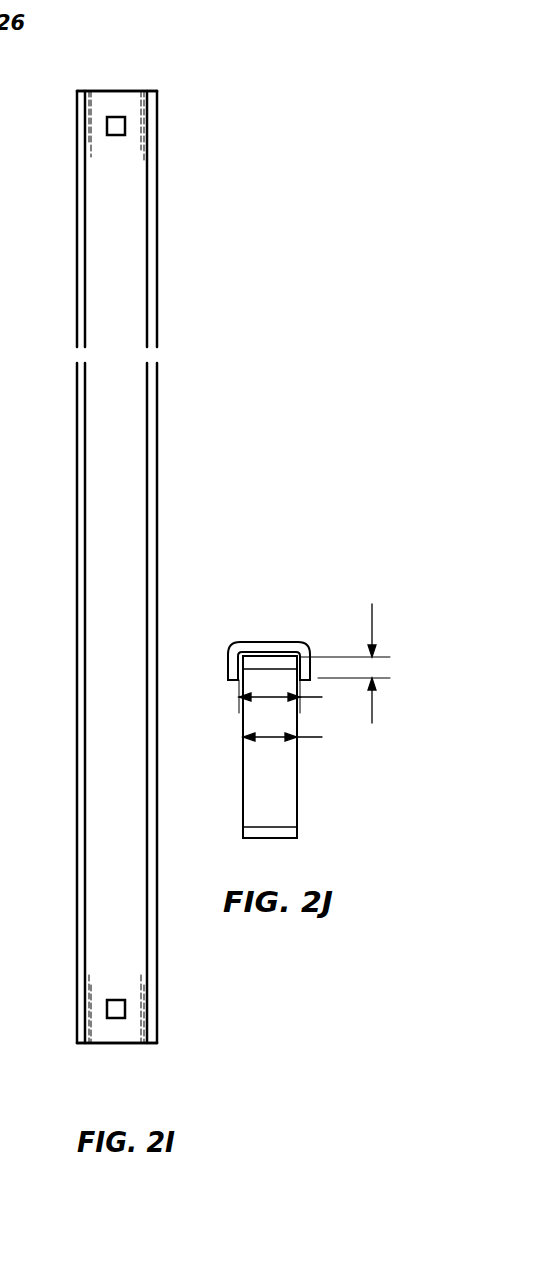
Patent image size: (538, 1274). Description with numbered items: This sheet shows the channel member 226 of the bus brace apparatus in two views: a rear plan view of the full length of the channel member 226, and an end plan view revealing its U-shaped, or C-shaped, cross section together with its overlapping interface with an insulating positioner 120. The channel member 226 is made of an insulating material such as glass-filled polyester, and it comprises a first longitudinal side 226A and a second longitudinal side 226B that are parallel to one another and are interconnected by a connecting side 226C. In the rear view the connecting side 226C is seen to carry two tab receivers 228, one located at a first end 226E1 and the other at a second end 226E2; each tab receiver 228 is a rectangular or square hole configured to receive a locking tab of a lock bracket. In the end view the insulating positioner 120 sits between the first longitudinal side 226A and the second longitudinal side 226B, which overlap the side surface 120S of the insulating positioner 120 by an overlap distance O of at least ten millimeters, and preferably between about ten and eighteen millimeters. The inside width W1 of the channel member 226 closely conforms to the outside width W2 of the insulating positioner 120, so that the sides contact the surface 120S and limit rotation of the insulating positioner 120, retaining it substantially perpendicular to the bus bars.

In FIG. 2I, the channel member 226 is at (130, 56).
In FIG. 2J, the channel member 226 is at (233, 634).
In FIG. 2I, the first longitudinal side 226A is at (77, 387).
In FIG. 2J, the first longitudinal side 226A is at (228, 668).
In FIG. 2I, the second longitudinal side 226B is at (157, 387).
In FIG. 2J, the second longitudinal side 226B is at (310, 668).
In FIG. 2I, the connecting side 226C is at (186, 253).
In FIG. 2J, the connecting side 226C is at (262, 641).
In FIG. 2I, the first end 226E1 is at (88, 82).
In FIG. 2I, the second end 226E2 is at (90, 1060).
In FIG. 2I, the tab receiver 228 is at (125, 126).
In FIG. 2J, the insulating positioner 120 is at (308, 821).
In FIG. 2J, the surface 120S is at (242, 763).
In FIG. 2J, the inside width W1 is at (297, 696).
In FIG. 2J, the outside width W2 is at (299, 736).
In FIG. 2J, the overlap distance O is at (345, 653).